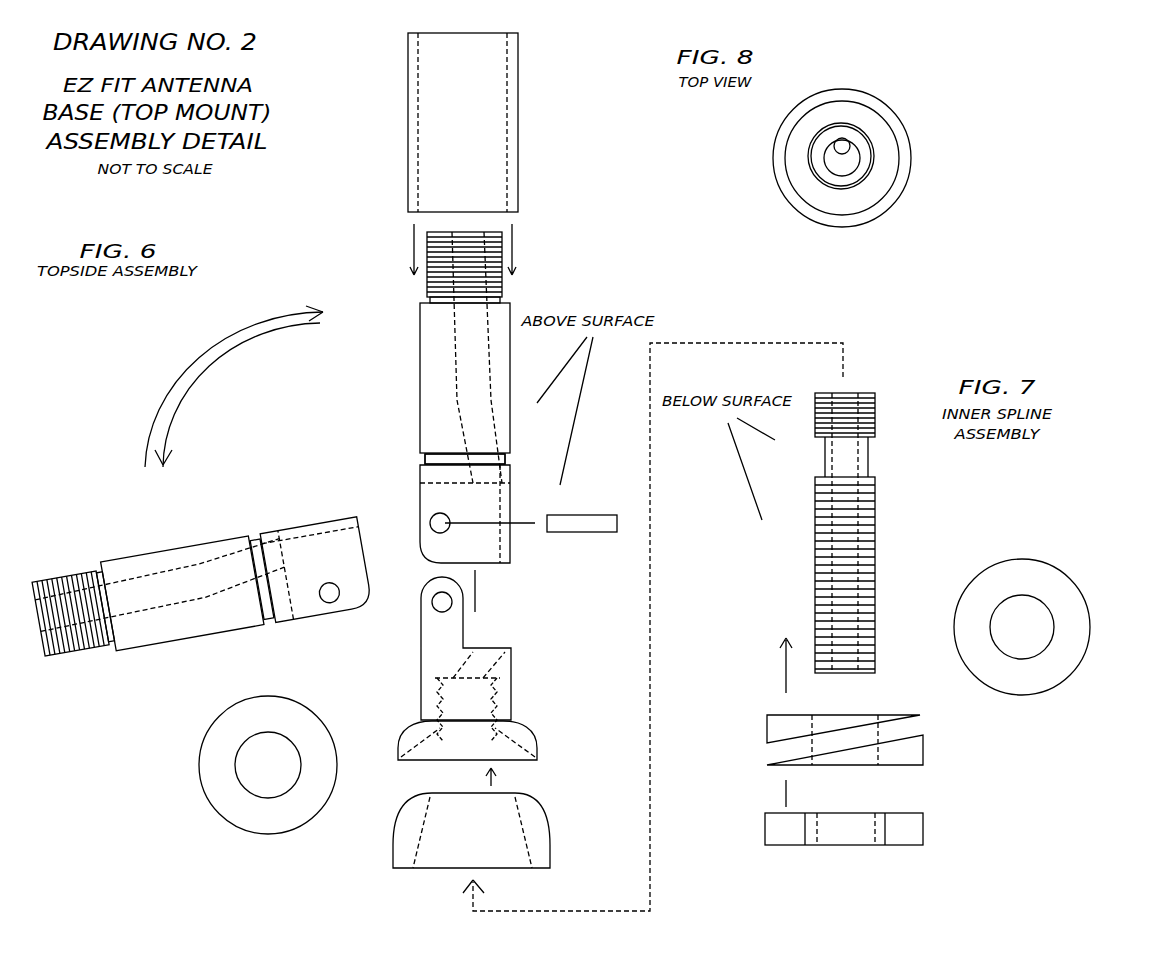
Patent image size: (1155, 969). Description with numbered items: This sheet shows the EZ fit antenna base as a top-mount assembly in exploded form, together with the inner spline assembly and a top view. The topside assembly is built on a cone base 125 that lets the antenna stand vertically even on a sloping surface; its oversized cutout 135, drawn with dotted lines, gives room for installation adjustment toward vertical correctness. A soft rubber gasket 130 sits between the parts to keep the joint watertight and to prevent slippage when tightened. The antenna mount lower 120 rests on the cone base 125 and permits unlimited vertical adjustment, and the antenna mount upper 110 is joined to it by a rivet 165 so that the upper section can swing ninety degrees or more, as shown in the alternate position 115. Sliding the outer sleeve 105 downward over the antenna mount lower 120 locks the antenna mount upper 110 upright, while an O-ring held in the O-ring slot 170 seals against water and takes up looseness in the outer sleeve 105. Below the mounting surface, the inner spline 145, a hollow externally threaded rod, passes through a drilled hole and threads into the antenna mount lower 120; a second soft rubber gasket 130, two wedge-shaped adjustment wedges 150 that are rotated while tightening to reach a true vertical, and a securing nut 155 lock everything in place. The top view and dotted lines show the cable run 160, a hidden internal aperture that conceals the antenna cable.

In FIG. 6, the outer sleeve 105 is at (402, 192).
In FIG. 8, the outer sleeve 105 is at (828, 203).
In FIG. 6, the antenna mount upper section 110 is at (412, 425).
In FIG. 8, the antenna mount upper section 110 is at (850, 180).
In FIG. 6, the alternate position of the antenna mount upper 115 is at (158, 560).
In FIG. 6, the antenna mount lower section 120 is at (518, 678).
In FIG. 6, the cone base 125 is at (550, 820).
In FIG. 8, the cone base 125 is at (783, 193).
In FIG. 6, the soft rubber gaskets 130 is at (392, 875).
In FIG. 7, the soft rubber gaskets 130 is at (915, 730).
In FIG. 6, the oversized cutout 135 is at (466, 853).
In FIG. 7, the inner spline 145 is at (878, 557).
In FIG. 7, the adjustment wedges 150 is at (903, 753).
In FIG. 7, the securing nut 155 is at (907, 833).
In FIG. 6, the cable run 160 is at (478, 387).
In FIG. 8, the cable run 160 is at (840, 145).
In FIG. 7, the cable run 160 is at (850, 560).
In FIG. 6, the rivet 165 is at (612, 536).
In FIG. 6, the O-ring slot 170 is at (405, 461).